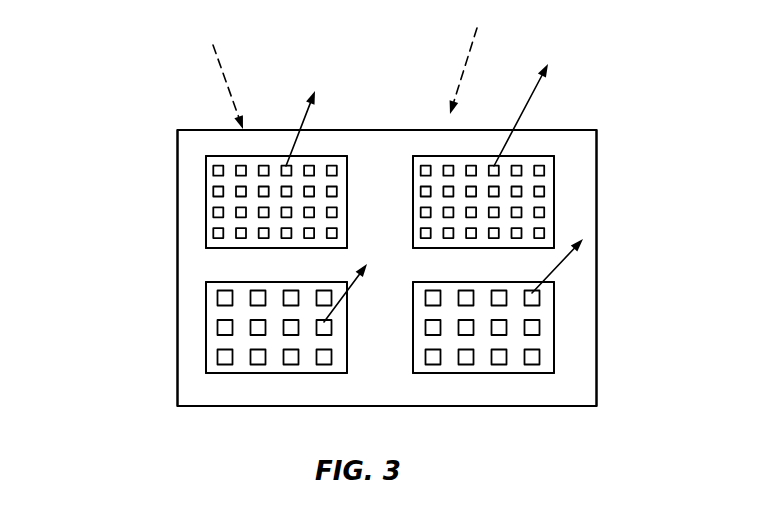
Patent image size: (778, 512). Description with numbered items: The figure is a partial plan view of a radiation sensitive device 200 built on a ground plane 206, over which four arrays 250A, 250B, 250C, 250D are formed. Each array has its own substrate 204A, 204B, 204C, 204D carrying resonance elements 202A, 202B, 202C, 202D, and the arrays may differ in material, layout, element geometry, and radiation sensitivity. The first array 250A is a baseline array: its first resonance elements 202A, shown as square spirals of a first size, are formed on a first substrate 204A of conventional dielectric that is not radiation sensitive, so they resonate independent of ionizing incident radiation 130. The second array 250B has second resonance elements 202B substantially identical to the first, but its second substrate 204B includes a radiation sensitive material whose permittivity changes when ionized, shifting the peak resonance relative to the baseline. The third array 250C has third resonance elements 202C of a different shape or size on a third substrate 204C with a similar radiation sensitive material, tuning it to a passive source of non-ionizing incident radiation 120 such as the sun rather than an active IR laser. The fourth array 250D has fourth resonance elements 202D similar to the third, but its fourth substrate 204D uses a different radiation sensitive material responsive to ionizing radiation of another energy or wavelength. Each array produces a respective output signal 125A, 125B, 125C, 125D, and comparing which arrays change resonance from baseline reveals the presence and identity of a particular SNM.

The radiation sensitive device 200 is at (166, 66).
The non-ionizing incident radiation 120 is at (460, 75).
The ionizing incident radiation 130 is at (227, 77).
The output signal 125A is at (307, 115).
The output signal 125B is at (533, 98).
The output signal 125C is at (357, 288).
The output signal 125D is at (567, 268).
The first array 250A is at (186, 166).
The second array 250B is at (537, 136).
The third array 250C is at (186, 302).
The fourth array 250D is at (585, 293).
The first resonance elements 202A is at (213, 212).
The second resonance elements 202B is at (547, 172).
The third resonance elements 202C is at (222, 325).
The fourth resonance elements 202D is at (547, 322).
The first substrate 204A is at (213, 243).
The second substrate 204B is at (547, 222).
The third substrate 204C is at (213, 343).
The fourth substrate 204D is at (547, 367).
The ground plane 206 is at (338, 390).